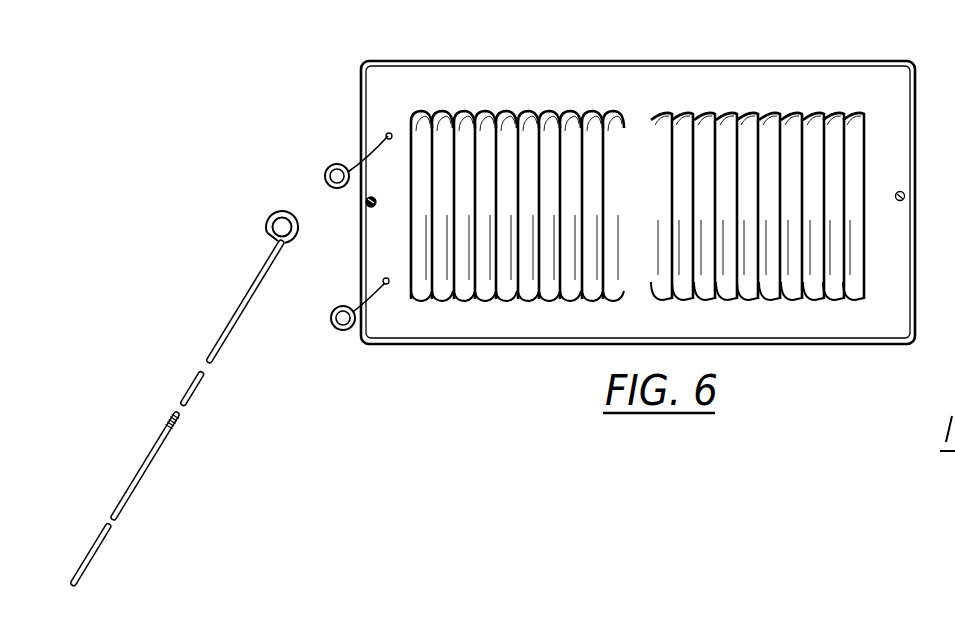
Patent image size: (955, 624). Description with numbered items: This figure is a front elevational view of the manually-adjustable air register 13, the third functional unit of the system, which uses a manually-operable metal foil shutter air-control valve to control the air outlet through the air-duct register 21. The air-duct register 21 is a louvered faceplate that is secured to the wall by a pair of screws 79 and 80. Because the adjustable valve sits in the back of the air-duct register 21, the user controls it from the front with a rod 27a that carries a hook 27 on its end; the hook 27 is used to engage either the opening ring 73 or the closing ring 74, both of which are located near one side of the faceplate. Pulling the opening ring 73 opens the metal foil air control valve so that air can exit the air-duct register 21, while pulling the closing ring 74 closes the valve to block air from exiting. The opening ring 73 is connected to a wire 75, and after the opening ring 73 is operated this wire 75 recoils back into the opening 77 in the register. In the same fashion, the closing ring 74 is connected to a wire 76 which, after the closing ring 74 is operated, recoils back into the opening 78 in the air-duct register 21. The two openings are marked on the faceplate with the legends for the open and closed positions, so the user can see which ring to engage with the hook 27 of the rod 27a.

The air register 13 is at (470, 48).
The air-duct register 21 is at (882, 347).
The hook 27 is at (268, 221).
The rod 27a is at (178, 421).
The opening ring 73 is at (325, 176).
The closing ring 74 is at (333, 331).
The wire 75 is at (356, 163).
The wire 76 is at (361, 303).
The opening 77 is at (386, 133).
The opening 78 is at (387, 284).
The screw 79 is at (366, 206).
The screw 80 is at (904, 201).